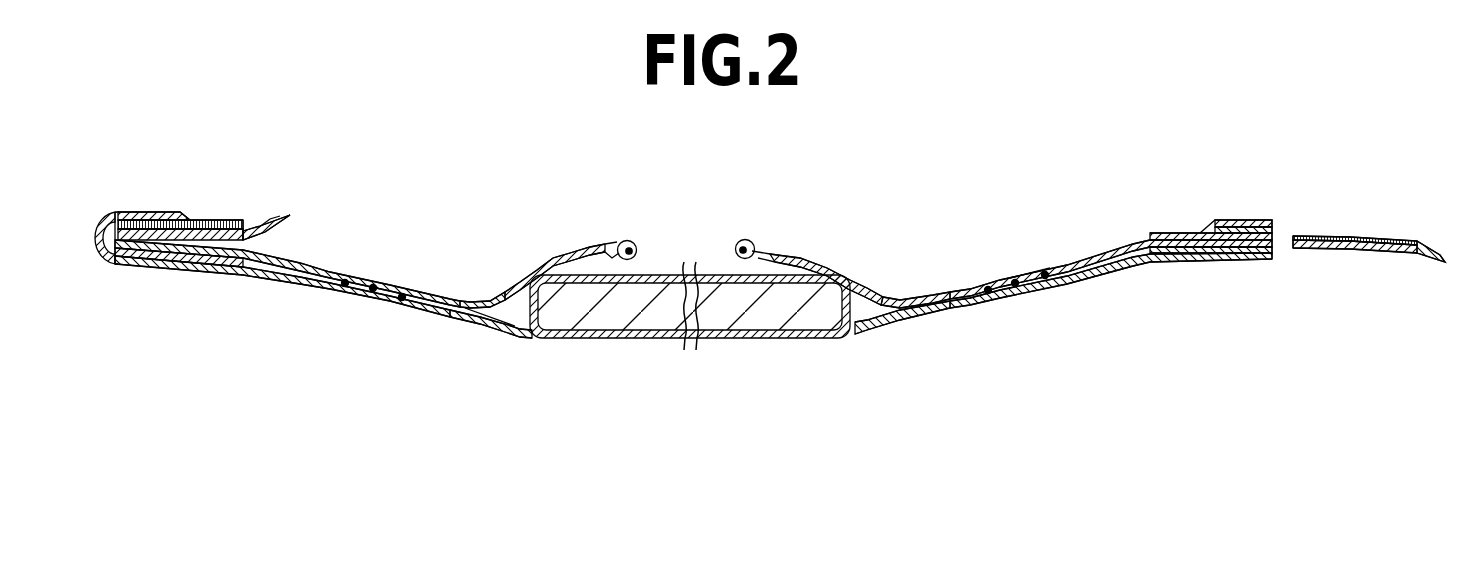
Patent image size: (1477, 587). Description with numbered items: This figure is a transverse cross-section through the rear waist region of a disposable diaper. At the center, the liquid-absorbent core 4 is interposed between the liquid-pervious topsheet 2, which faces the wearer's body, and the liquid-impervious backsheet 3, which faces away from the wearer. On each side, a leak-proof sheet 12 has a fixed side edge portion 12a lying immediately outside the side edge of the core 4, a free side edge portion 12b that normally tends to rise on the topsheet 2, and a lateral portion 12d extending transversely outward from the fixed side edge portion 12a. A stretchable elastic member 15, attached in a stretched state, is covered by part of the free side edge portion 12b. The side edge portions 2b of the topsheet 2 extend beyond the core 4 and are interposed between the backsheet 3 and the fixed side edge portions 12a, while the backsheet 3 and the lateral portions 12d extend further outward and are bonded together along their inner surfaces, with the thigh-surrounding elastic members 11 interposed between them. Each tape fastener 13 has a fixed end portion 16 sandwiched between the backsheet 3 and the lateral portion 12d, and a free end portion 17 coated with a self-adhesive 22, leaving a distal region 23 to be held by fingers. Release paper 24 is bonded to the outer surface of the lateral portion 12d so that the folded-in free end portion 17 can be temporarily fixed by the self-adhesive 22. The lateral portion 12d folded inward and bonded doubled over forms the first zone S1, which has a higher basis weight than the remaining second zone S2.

The topsheet 2 is at (655, 270).
The side edge portions of the topsheet 2b is at (497, 322).
The backsheet 3 is at (720, 339).
The core 4 is at (708, 293).
The thigh-surrounding elastic members 11 is at (371, 332).
The leak-proof sheets 12 is at (560, 258).
The fixed side edge portion 12a is at (465, 296).
The free side edge portion 12b is at (593, 247).
The lateral portion 12d is at (332, 272).
The tape fasteners 13 is at (284, 219).
The elastic member 15 is at (634, 242).
The fixed end portion 16 is at (183, 262).
The free end portion 17 is at (185, 222).
The self-adhesive 22 is at (222, 230).
The distal region 23 is at (272, 220).
The release paper 24 is at (160, 220).
The first zone S1 is at (130, 213).
The second zone S2 is at (1028, 272).